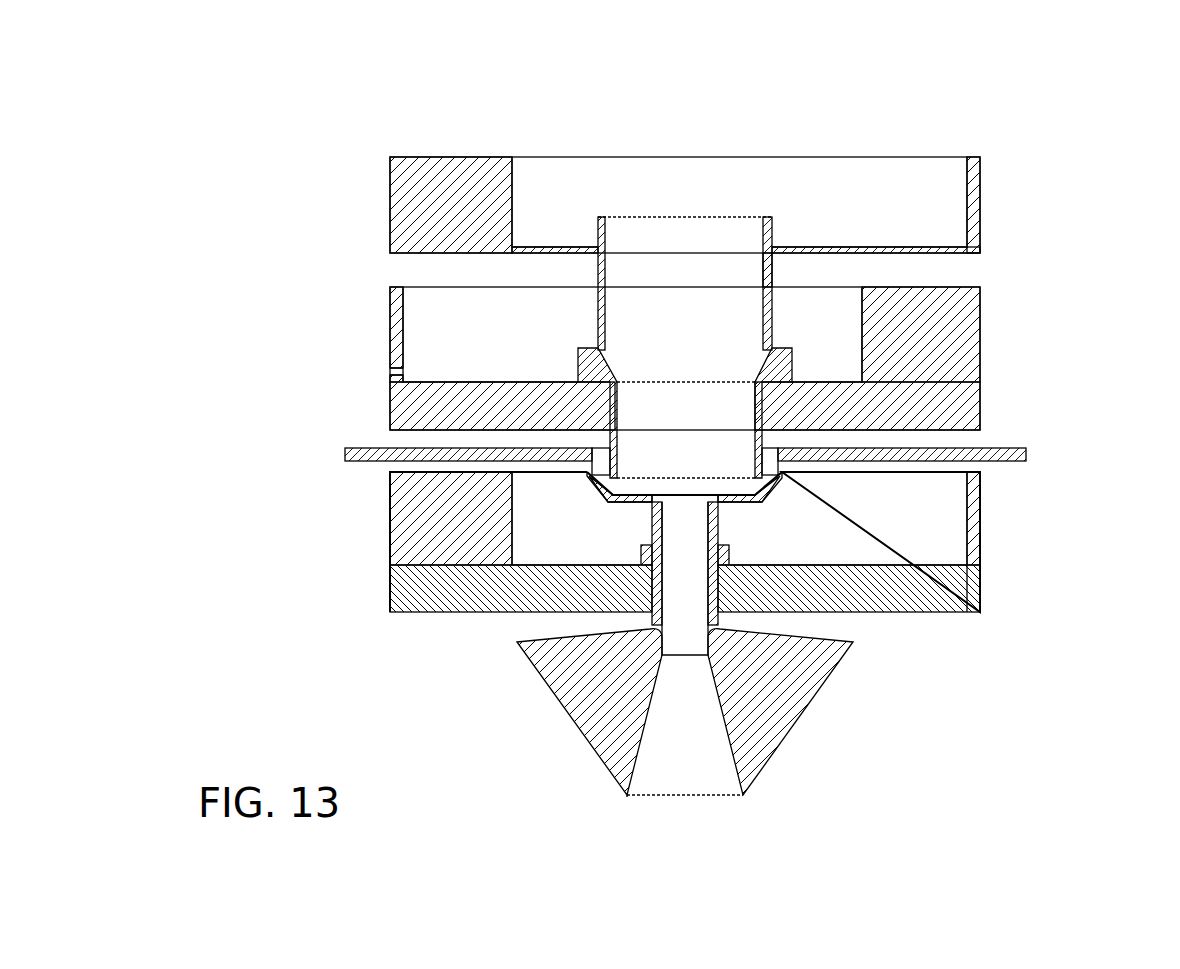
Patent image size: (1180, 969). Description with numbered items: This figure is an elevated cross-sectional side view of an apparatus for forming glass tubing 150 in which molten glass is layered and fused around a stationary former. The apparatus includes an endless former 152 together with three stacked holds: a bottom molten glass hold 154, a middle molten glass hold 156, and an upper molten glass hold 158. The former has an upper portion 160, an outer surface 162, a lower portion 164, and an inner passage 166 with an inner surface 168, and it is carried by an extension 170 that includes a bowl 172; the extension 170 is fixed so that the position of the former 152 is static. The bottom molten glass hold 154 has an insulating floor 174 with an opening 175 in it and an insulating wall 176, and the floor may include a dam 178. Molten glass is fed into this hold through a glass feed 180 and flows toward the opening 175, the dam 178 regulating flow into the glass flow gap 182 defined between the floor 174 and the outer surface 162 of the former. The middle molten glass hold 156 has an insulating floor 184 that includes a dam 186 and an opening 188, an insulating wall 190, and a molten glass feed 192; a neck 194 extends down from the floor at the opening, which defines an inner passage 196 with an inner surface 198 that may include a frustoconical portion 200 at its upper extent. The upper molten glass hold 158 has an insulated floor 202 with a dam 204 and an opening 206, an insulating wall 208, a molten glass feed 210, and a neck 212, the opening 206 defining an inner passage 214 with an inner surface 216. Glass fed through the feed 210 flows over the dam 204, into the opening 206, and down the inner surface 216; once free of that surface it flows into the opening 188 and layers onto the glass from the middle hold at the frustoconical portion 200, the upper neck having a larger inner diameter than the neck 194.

The apparatus for forming glass tubing 150 is at (1015, 117).
The endless former 152 is at (530, 728).
The bottom molten glass hold 154 is at (313, 535).
The middle molten glass hold 156 is at (297, 340).
The upper molten glass hold 158 is at (313, 200).
The upper portion 160 is at (582, 494).
The outer surface 162 is at (720, 508).
The lower portion 164 is at (848, 641).
The inner passage 166 is at (690, 797).
The inner surface 168 is at (627, 797).
The extension 170 is at (1026, 454).
The bowl 172 is at (782, 478).
The insulating floor 174 is at (828, 565).
The opening 175 is at (562, 585).
The insulating wall 176 is at (968, 503).
The dam 178 is at (640, 546).
The glass feed 180 is at (982, 562).
The glass flow gap 182 is at (730, 556).
The insulating floor 184 is at (440, 380).
The dam 186 is at (578, 352).
The opening 188 is at (770, 342).
The insulating wall 190 is at (403, 298).
The molten glass feed 192 is at (390, 372).
The neck 194 is at (617, 455).
The inner passage 196 is at (686, 430).
The inner surface 198 is at (755, 408).
The frustoconical portion 200 is at (600, 358).
The insulated floor 202 is at (520, 245).
The dam 204 is at (598, 217).
The opening 206 is at (763, 245).
The insulating wall 208 is at (512, 160).
The molten glass feed 210 is at (983, 250).
The neck 212 is at (772, 258).
The inner passage 214 is at (726, 257).
The inner surface 216 is at (605, 305).